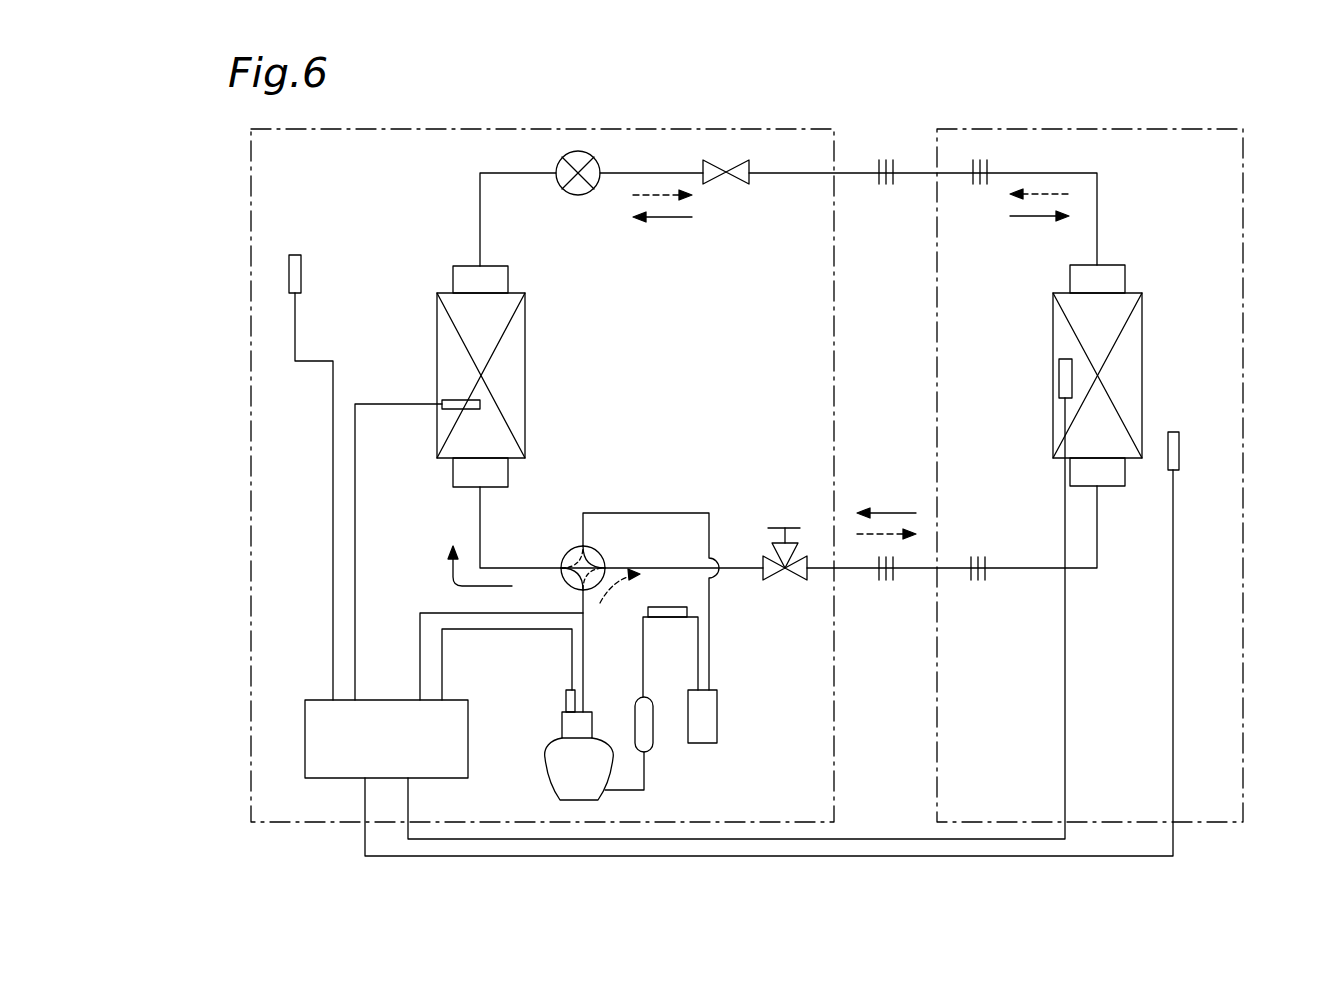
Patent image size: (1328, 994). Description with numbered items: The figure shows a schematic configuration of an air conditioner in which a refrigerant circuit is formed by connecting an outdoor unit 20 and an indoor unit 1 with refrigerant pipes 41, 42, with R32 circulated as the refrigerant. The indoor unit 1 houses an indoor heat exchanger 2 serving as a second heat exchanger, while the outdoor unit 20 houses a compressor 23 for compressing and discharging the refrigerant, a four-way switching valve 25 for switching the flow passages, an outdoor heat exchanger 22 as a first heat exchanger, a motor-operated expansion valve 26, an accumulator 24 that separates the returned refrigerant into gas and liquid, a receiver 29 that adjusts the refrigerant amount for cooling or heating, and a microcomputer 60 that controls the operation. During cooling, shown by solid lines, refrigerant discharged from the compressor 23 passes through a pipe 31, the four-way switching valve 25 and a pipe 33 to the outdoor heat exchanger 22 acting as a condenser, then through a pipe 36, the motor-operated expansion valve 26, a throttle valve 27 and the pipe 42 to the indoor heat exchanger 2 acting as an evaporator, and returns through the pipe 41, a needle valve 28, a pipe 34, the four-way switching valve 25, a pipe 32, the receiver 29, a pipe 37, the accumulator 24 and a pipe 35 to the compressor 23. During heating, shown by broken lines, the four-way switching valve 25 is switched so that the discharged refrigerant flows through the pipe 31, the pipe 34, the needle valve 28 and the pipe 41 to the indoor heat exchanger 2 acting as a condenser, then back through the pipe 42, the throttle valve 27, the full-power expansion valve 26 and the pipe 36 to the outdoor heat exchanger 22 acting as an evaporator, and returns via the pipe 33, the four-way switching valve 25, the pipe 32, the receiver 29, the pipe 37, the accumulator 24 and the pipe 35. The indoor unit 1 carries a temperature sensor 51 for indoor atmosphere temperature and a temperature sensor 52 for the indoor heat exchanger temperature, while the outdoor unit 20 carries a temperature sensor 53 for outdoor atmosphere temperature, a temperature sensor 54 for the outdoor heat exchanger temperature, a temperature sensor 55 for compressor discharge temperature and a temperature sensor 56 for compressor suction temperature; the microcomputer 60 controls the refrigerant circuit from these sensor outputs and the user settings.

The indoor unit 1 is at (1252, 220).
The indoor heat exchanger 2 is at (1142, 318).
The outdoor unit 20 is at (246, 203).
The outdoor heat exchanger 22 is at (437, 322).
The compressor 23 is at (545, 763).
The accumulator 24 is at (634, 716).
The four-way switching valve 25 is at (566, 552).
The motor-operated expansion valve 26 is at (578, 195).
The throttle valve 27 is at (735, 184).
The needle valve 28 is at (785, 528).
The receiver 29 is at (717, 716).
The pipe 31 is at (583, 661).
The pipe 32 is at (648, 513).
The pipe 33 is at (480, 532).
The pipe 34 is at (742, 572).
The pipe 35 is at (645, 770).
The pipe 36 is at (480, 202).
The pipe 37 is at (668, 620).
The refrigerant pipe 41 is at (912, 572).
The refrigerant pipe 42 is at (912, 172).
The temperature sensor 51 is at (1180, 445).
The temperature sensor 52 is at (1059, 390).
The temperature sensor 53 is at (295, 255).
The temperature sensor 54 is at (448, 400).
The temperature sensor 55 is at (566, 707).
The temperature sensor 56 is at (648, 607).
The microcomputer 60 is at (318, 700).